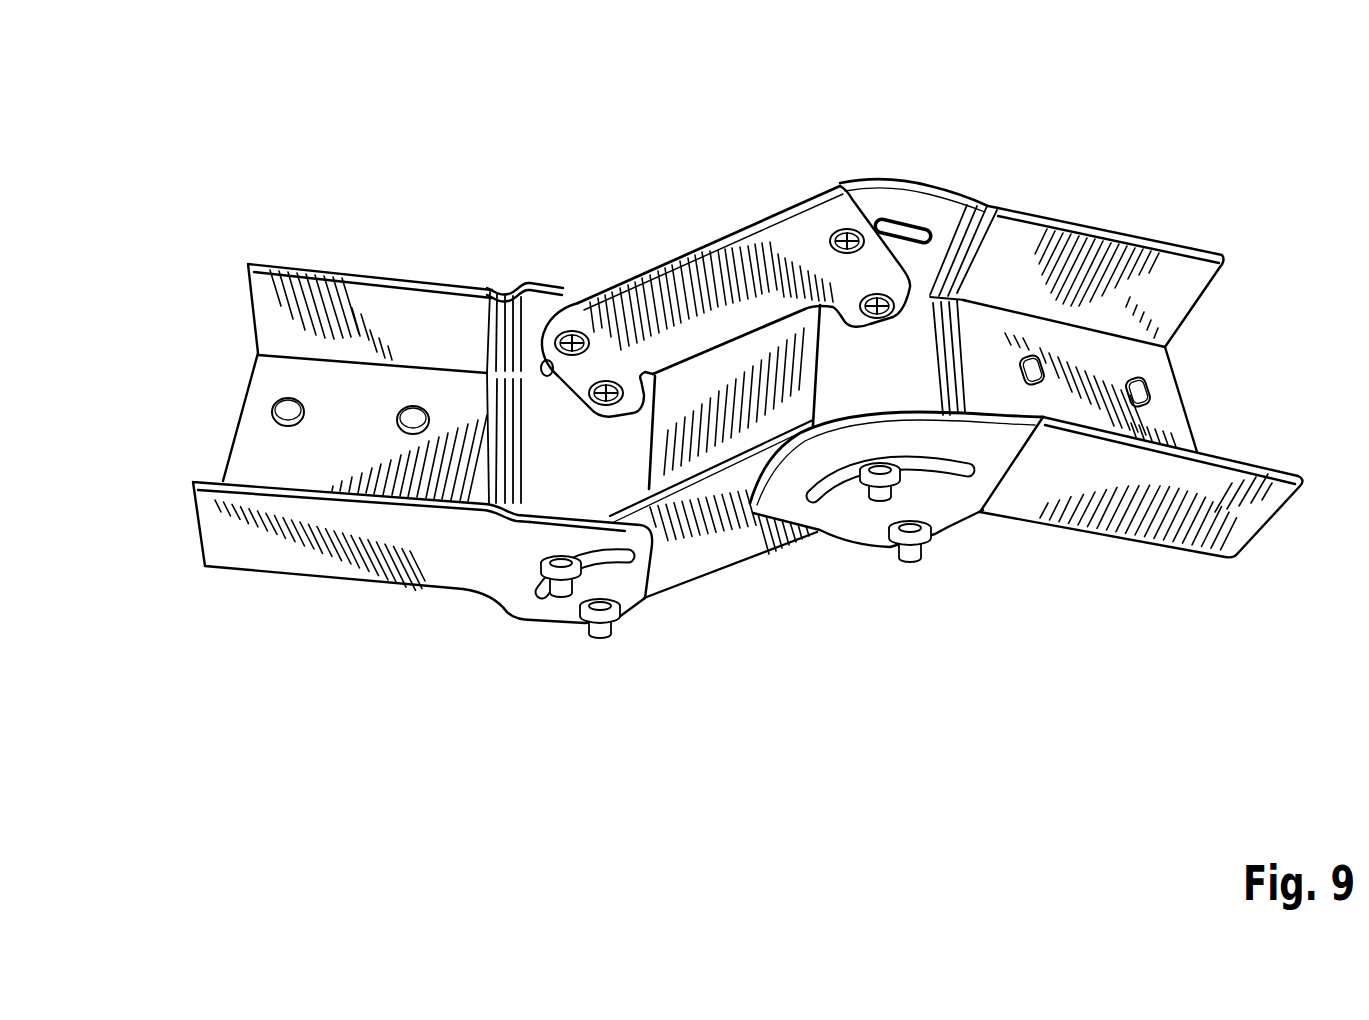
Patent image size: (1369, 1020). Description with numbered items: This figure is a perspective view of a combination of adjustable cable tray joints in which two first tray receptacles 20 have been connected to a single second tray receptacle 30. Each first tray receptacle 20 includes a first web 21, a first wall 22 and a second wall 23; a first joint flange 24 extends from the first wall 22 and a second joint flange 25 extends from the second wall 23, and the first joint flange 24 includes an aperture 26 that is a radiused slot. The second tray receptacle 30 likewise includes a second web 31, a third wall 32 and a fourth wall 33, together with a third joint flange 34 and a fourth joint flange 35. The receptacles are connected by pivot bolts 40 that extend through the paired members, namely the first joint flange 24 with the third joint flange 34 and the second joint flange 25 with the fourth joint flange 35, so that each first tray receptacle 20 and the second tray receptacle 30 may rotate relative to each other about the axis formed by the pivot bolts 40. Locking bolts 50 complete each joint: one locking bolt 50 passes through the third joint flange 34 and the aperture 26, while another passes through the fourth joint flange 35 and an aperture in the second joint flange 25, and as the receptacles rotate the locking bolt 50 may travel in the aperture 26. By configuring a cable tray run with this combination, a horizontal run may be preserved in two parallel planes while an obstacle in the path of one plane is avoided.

The first tray receptacle 20 is at (237, 570).
The first web 21 is at (262, 455).
The first wall 22 is at (352, 515).
The second wall 23 is at (398, 308).
The first joint flange 24 is at (570, 610).
The second joint flange 25 is at (547, 300).
The aperture 26 is at (643, 597).
The second tray receptacle 30 is at (780, 552).
The second web 31 is at (750, 420).
The third wall 32 is at (700, 555).
The fourth wall 33 is at (807, 237).
The third joint flange 34 is at (587, 510).
The fourth joint flange 35 is at (612, 282).
The pivot bolt 40 is at (612, 392).
The locking bolt 50 is at (863, 233).